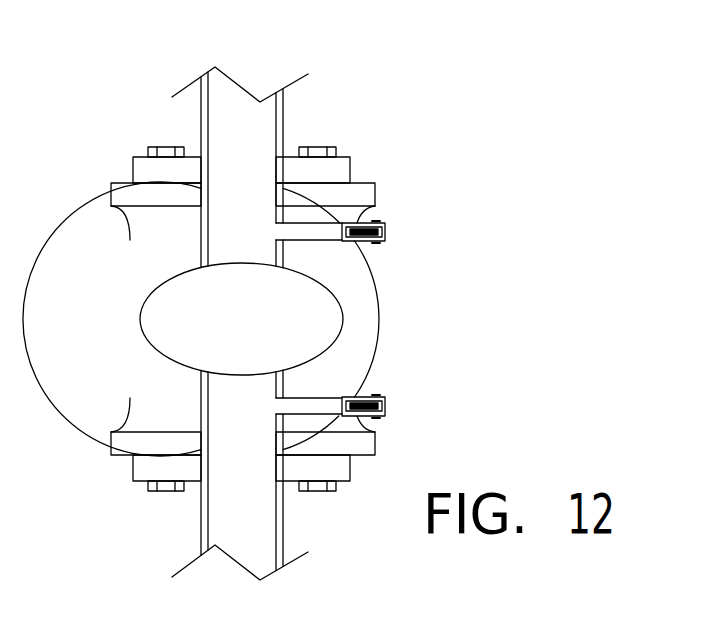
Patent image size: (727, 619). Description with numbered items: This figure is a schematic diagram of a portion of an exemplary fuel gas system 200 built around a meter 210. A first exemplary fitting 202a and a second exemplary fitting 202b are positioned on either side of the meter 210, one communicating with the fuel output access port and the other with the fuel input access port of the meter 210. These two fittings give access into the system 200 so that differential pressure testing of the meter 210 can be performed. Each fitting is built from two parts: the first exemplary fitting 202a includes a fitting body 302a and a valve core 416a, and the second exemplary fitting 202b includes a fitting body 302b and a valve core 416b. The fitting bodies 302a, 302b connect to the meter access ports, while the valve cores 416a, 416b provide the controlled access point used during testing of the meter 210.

The system 200 is at (129, 99).
The meter 210 is at (379, 312).
The fitting body 302a is at (357, 242).
The fitting body 302b is at (362, 397).
The valve core 416a is at (386, 230).
The valve core 416b is at (386, 405).
The first exemplary fitting 202a is at (375, 222).
The second exemplary fitting 202b is at (373, 417).